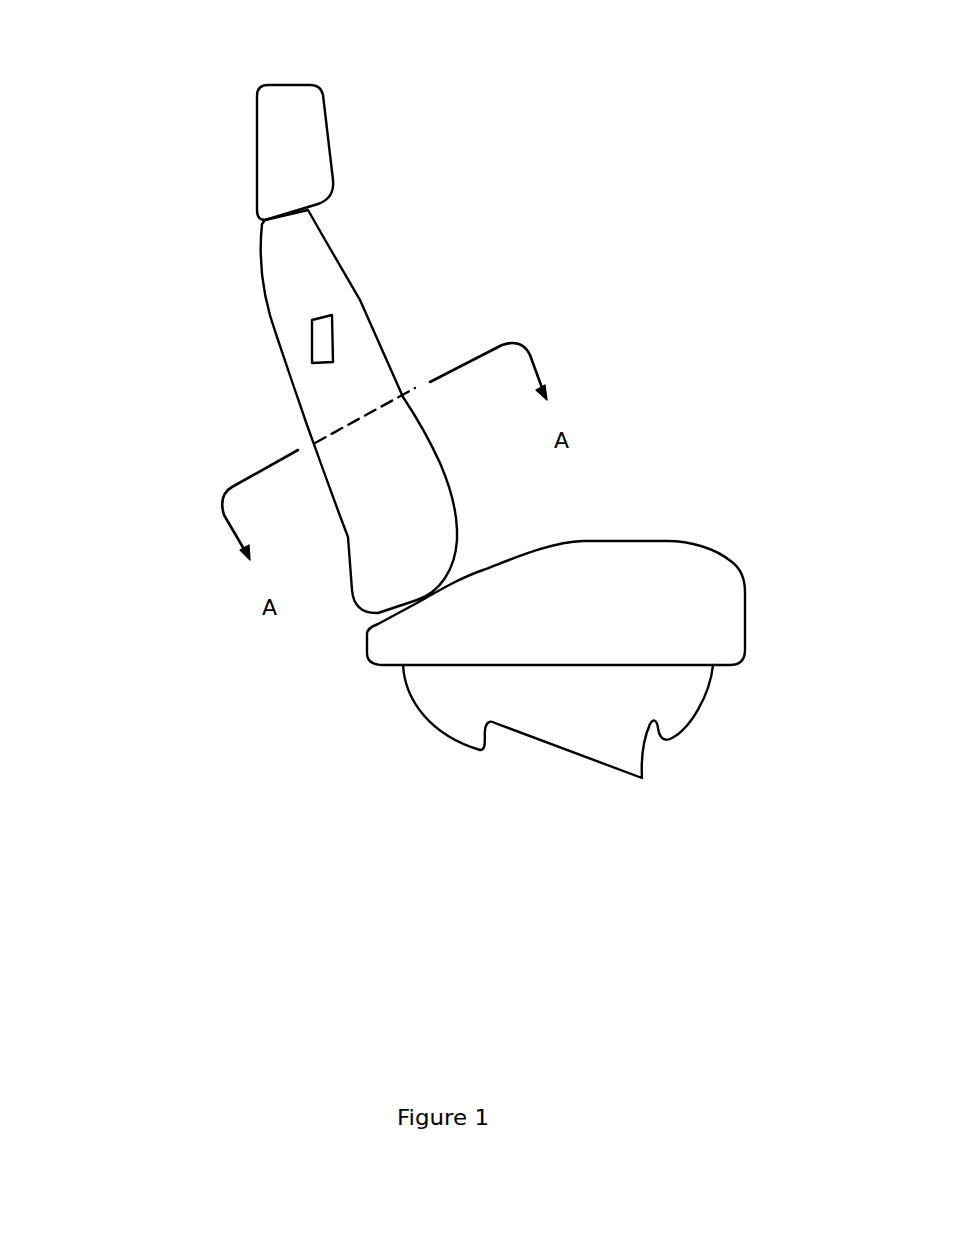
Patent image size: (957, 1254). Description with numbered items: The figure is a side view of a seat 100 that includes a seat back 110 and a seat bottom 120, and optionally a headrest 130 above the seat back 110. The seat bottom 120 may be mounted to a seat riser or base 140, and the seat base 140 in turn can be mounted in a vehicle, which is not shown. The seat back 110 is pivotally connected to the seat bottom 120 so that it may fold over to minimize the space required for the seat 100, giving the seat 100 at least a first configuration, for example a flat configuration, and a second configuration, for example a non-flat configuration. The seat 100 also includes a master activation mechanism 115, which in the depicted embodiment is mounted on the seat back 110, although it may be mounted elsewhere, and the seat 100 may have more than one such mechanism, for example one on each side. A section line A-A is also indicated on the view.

The seat 100 is at (540, 183).
The seat back 110 is at (260, 277).
The master activation mechanism 115 is at (317, 338).
The seat bottom 120 is at (672, 540).
The headrest 130 is at (262, 112).
The seat riser or base 140 is at (558, 738).